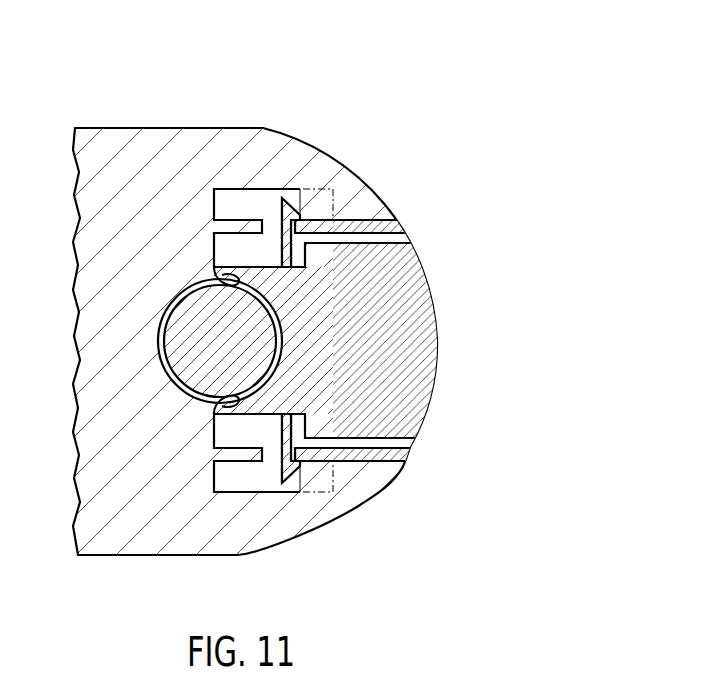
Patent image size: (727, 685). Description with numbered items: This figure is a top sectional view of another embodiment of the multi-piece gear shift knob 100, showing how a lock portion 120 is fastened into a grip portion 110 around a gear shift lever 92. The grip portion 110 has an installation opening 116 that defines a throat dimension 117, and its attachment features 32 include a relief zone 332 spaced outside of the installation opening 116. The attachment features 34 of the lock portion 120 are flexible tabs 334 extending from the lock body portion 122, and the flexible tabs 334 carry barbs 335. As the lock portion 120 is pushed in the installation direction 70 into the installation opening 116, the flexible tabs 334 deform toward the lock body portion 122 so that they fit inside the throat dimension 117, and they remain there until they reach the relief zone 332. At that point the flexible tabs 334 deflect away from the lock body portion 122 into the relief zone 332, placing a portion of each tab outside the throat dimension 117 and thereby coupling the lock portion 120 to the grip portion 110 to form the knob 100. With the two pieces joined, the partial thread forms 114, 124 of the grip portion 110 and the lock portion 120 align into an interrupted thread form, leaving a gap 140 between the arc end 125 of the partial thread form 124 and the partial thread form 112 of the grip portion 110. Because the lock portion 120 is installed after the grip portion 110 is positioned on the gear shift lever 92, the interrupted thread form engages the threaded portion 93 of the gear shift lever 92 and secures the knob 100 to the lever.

The multi-piece gear shift knob 100 is at (445, 105).
The grip portion 110 is at (297, 115).
The partial thread form 112 is at (110, 557).
The partial thread form 114 is at (160, 333).
The installation opening 116 is at (384, 240).
The throat dimension 117 is at (410, 233).
The lock portion 120 is at (434, 298).
The lock body portion 122 is at (397, 386).
The partial thread form 124 is at (283, 340).
The arc end 125 is at (238, 284).
The gap 140 is at (226, 263).
The installation direction 70 is at (273, 82).
The gear shift lever 92 is at (167, 315).
The threaded portion 93 is at (177, 366).
The attachment features 32 is at (334, 495).
The attachment features 34 is at (285, 484).
The relief zone 332 is at (310, 216).
The flexible tabs 334 is at (288, 204).
The barbs 335 is at (293, 213).